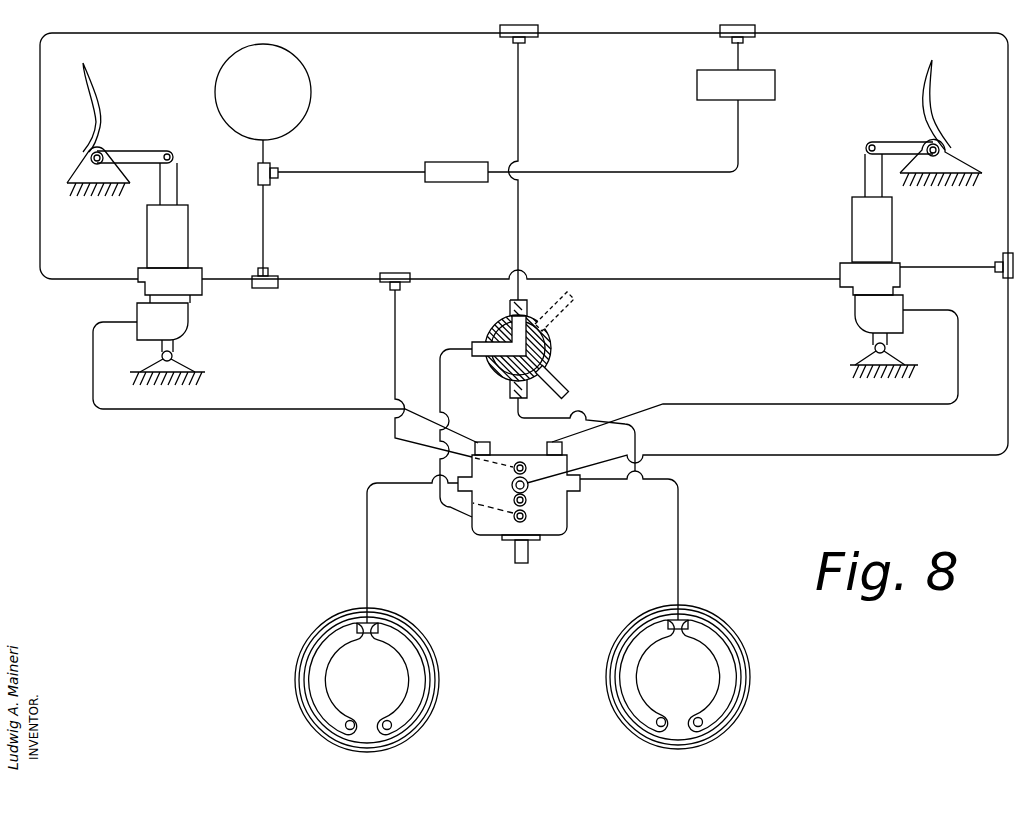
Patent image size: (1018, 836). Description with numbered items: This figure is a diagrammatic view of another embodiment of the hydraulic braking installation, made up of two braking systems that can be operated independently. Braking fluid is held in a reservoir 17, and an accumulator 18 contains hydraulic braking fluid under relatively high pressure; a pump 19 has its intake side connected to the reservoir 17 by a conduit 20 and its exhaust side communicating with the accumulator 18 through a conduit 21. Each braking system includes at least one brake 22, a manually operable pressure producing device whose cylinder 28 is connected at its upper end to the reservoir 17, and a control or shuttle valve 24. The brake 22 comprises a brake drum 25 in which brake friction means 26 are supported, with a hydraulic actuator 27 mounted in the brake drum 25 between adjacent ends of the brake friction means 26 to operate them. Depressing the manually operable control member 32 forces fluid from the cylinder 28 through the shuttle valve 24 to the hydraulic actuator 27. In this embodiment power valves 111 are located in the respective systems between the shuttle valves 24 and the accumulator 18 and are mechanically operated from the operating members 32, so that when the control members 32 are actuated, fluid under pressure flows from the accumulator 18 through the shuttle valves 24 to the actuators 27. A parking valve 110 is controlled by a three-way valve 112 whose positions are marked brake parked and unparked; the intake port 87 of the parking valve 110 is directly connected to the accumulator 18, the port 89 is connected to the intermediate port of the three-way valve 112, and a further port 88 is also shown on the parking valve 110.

The reservoir 17 is at (776, 82).
The accumulator 18 is at (313, 102).
The pump 19 is at (468, 163).
The conduit 20 is at (619, 172).
The conduit 21 is at (358, 172).
The brake 22 is at (435, 638).
The shuttle valve 24 is at (486, 442).
The brake drum 25 is at (334, 622).
The brake friction means 26 is at (410, 705).
The hydraulic actuator 27 is at (378, 613).
The cylinder 28 is at (190, 235).
The manually operable control member 32 is at (134, 148).
The intake port 87 is at (527, 461).
The port 88 is at (528, 499).
The port 89 is at (528, 518).
The parking valve 110 is at (522, 565).
The power valve 111 is at (200, 270).
The three-way valve 112 is at (551, 360).